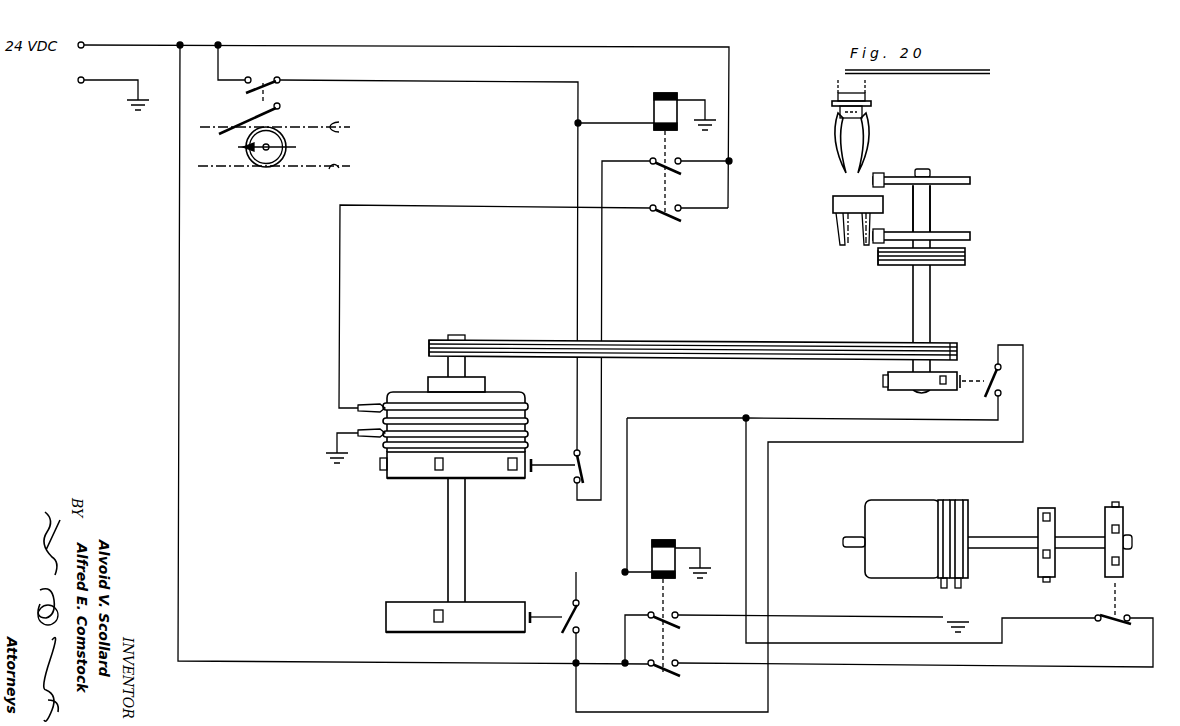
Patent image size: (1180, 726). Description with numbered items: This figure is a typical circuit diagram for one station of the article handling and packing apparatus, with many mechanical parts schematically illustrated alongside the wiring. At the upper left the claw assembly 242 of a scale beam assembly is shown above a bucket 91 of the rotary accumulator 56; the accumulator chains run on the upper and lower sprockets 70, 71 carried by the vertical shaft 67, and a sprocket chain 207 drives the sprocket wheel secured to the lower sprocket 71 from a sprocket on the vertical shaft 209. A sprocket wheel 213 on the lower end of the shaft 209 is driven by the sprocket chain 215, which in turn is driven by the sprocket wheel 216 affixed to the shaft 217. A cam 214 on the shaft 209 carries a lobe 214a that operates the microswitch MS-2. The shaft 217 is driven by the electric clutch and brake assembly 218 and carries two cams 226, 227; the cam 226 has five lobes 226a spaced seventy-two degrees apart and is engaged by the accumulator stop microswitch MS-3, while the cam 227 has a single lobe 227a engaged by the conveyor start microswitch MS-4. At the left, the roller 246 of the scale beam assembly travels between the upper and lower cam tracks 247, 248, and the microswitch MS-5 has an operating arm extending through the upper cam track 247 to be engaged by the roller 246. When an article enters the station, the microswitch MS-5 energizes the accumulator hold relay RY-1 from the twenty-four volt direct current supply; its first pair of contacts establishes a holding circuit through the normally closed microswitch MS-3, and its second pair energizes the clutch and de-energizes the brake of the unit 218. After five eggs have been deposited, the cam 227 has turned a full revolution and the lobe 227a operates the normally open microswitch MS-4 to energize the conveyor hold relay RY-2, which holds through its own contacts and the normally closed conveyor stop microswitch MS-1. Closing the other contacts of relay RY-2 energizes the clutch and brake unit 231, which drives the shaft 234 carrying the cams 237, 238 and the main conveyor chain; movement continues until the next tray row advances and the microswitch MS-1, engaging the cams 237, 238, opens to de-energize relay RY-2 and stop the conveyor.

The claw assembly 242 is at (828, 153).
The bucket 91 is at (834, 234).
The upper sprocket 70 is at (958, 178).
The vertical shaft 67 is at (934, 215).
The lower sprocket 71 is at (958, 232).
The sprocket chain 207 is at (966, 256).
The rotary accumulator 56 is at (871, 259).
The vertical shaft 209 is at (925, 283).
The sprocket wheel 213 is at (950, 345).
The sprocket chain 215 is at (700, 347).
The sprocket wheel 216 is at (437, 345).
The cam 214 is at (902, 391).
The lobe 214a is at (946, 391).
The electric clutch and brake assembly 218 is at (411, 386).
The cam 226 is at (484, 470).
The lobe 226a is at (380, 470).
The shaft 217 is at (458, 543).
The cam 227 is at (477, 617).
The lobe 227a is at (431, 616).
The roller 246 is at (273, 160).
The upper cam track 247 is at (345, 129).
The cam track 248 is at (342, 166).
The clutch and brake unit 231 is at (877, 503).
The shaft 234 is at (1007, 548).
The cam 237 is at (1038, 525).
The cam 238 is at (1107, 525).
The conveyor stop microswitch MS-1 is at (1110, 627).
The microswitch MS-2 is at (988, 376).
The accumulator stop microswitch MS-3 is at (580, 467).
The conveyor start microswitch MS-4 is at (580, 626).
The microswitch MS-5 is at (286, 97).
The accumulator hold relay RY-1 is at (655, 112).
The conveyor hold relay RY-2 is at (662, 556).